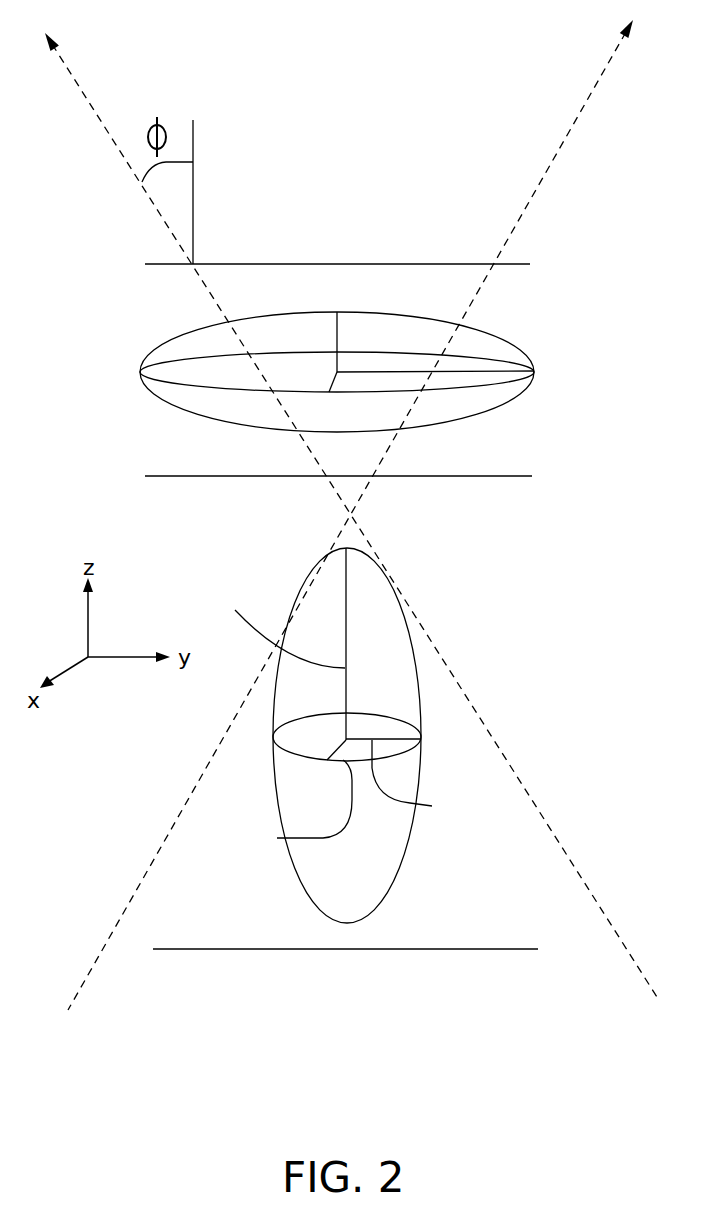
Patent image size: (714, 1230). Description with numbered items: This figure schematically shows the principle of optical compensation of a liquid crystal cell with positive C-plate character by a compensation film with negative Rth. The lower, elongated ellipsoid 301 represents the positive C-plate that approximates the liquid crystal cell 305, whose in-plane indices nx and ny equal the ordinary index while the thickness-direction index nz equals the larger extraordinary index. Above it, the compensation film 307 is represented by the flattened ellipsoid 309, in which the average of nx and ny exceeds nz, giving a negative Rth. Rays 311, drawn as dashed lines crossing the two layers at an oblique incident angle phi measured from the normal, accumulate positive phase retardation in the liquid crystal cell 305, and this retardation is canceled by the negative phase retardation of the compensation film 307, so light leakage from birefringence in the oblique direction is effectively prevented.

The ellipsoid 301 is at (407, 605).
The liquid crystal cell 305 is at (515, 650).
The compensation film 307 is at (520, 436).
The ellipsoid 309 is at (515, 345).
The rays 311 is at (525, 790).